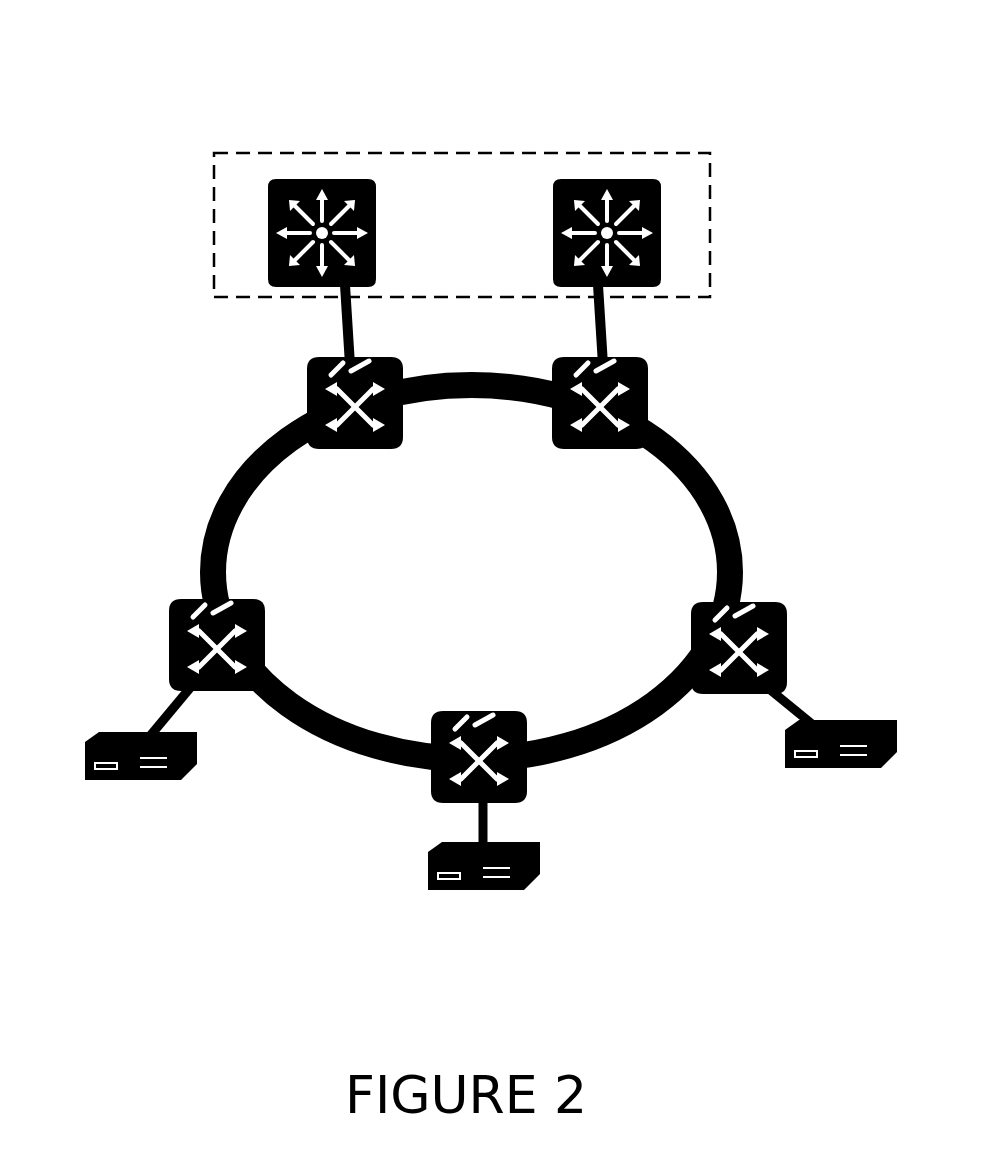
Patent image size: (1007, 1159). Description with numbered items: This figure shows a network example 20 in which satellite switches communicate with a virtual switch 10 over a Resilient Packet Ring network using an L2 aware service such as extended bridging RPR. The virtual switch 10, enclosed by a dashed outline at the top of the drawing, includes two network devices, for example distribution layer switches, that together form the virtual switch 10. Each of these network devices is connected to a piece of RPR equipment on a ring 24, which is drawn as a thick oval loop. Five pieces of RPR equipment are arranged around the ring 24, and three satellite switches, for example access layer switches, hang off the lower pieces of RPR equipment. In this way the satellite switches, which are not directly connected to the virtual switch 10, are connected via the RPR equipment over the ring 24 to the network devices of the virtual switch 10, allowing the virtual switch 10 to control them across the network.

The virtual switch 10 is at (710, 245).
The network 20 is at (718, 52).
The ring 24 is at (725, 496).